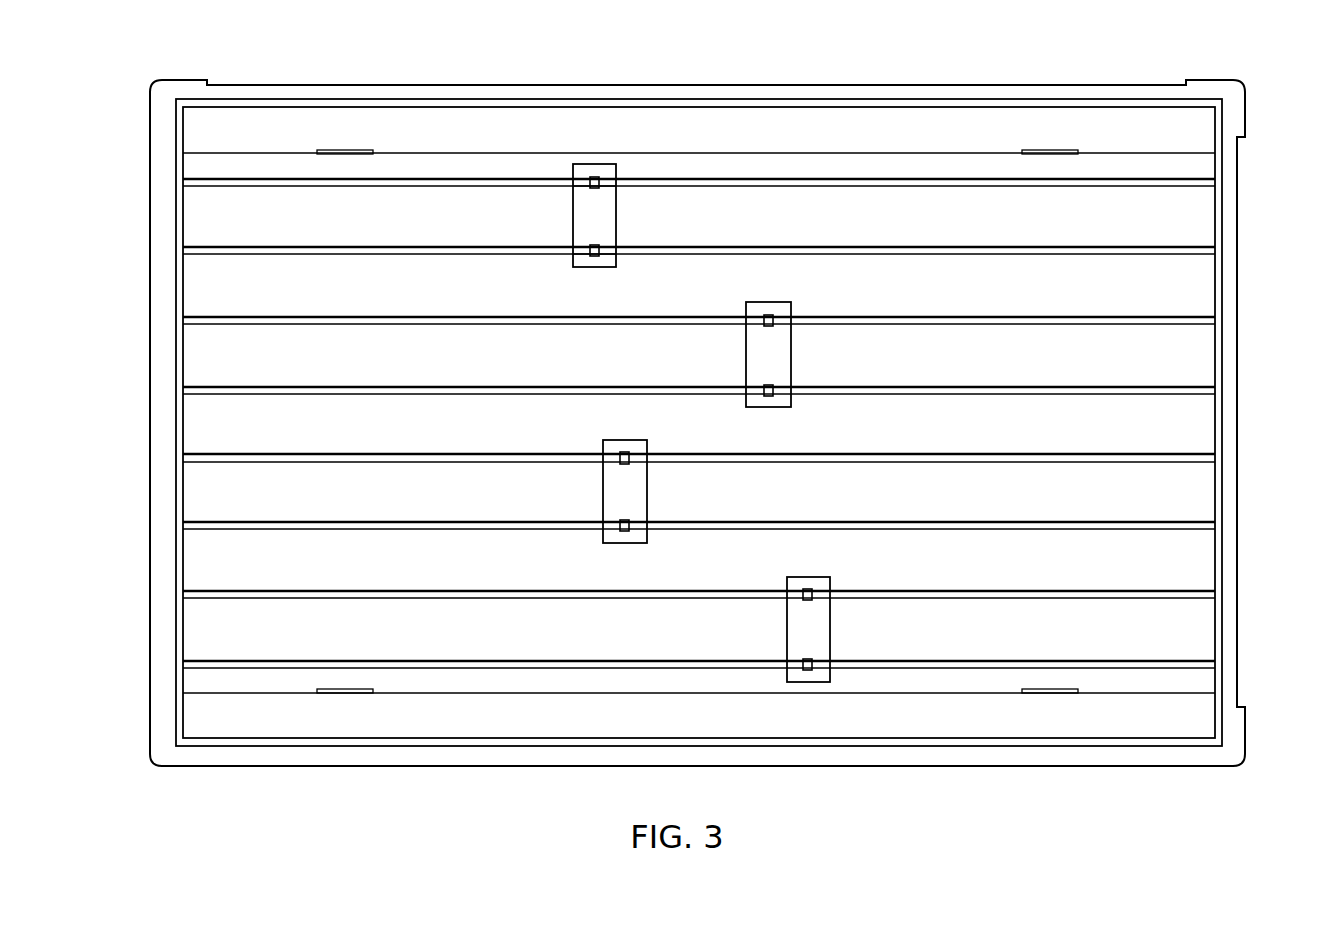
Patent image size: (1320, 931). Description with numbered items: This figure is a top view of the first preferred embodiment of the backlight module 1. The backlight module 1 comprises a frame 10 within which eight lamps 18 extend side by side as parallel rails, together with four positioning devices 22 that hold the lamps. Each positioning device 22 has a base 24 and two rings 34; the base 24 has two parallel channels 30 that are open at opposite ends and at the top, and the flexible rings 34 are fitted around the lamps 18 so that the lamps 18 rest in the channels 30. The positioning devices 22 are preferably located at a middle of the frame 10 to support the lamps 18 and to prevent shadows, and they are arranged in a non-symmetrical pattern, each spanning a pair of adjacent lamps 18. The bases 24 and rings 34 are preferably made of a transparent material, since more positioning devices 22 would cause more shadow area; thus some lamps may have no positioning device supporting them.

The backlight module 1 is at (932, 66).
The frame 10 is at (1227, 203).
The lamps 18 is at (275, 179).
The positioning device 22 is at (546, 166).
The base 24 is at (607, 215).
The channels 30 is at (607, 180).
The rings 34 is at (590, 248).